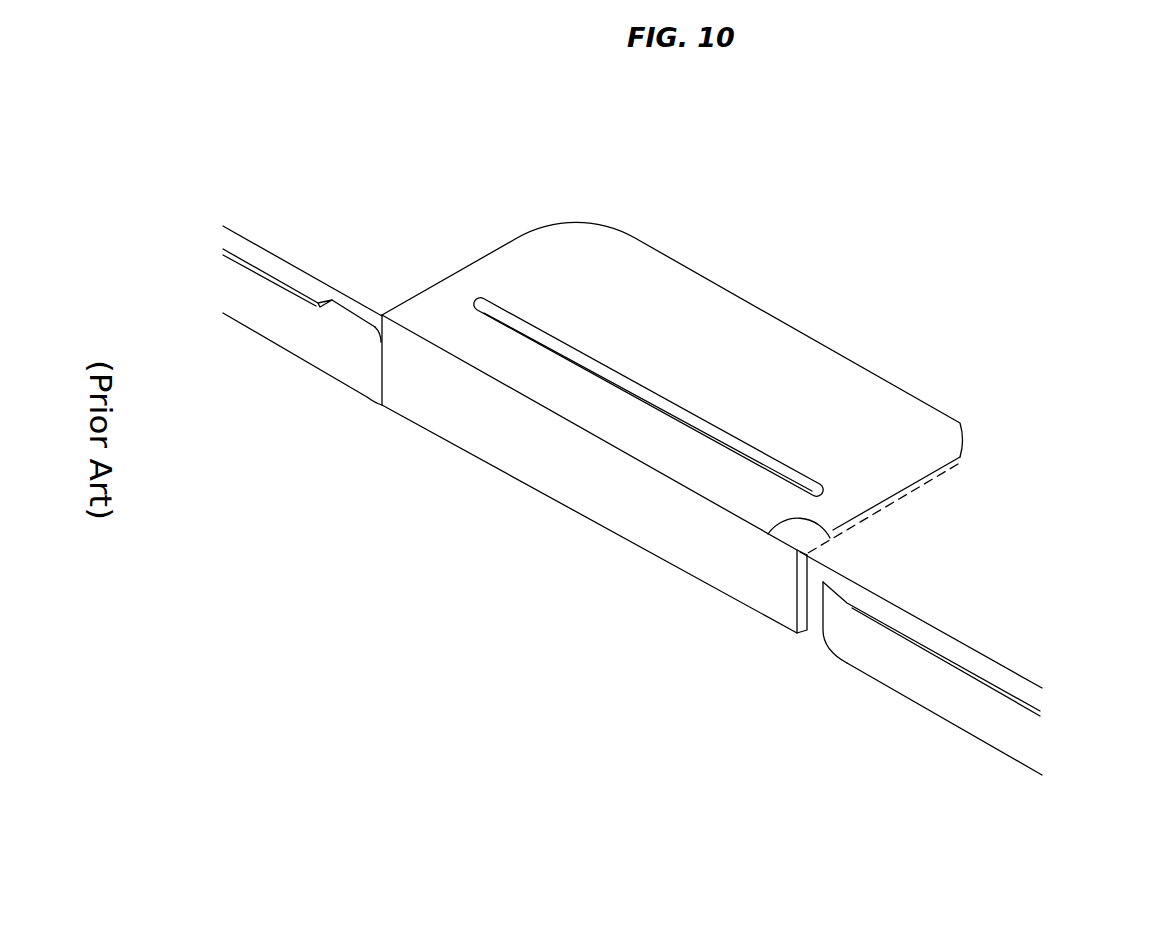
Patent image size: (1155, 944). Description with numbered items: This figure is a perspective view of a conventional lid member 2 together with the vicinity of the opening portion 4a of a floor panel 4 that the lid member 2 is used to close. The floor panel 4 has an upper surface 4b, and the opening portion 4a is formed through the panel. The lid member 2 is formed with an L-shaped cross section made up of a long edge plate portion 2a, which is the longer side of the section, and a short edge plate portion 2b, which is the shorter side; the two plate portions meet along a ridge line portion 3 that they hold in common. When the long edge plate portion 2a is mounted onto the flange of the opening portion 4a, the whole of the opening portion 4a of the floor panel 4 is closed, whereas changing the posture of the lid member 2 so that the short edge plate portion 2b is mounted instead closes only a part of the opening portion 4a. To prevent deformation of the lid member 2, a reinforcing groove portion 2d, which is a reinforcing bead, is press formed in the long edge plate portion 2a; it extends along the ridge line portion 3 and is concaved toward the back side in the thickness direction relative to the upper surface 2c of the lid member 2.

The lid member 2 is at (731, 388).
The long edge plate portion 2a is at (672, 387).
The short edge plate portion 2b is at (592, 493).
The upper surface 2c is at (628, 317).
The reinforcing groove portion 2d is at (781, 482).
The ridge line portion 3 is at (843, 530).
The floor panel 4 is at (632, 428).
The opening portion 4a is at (705, 555).
The upper surface 4b is at (688, 177).